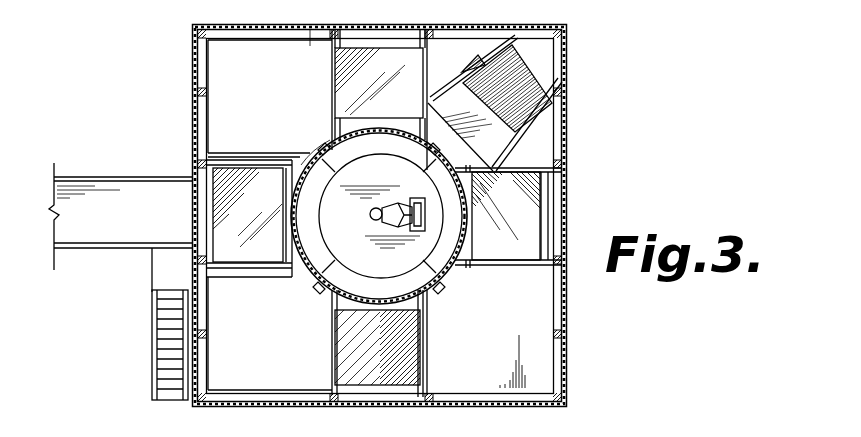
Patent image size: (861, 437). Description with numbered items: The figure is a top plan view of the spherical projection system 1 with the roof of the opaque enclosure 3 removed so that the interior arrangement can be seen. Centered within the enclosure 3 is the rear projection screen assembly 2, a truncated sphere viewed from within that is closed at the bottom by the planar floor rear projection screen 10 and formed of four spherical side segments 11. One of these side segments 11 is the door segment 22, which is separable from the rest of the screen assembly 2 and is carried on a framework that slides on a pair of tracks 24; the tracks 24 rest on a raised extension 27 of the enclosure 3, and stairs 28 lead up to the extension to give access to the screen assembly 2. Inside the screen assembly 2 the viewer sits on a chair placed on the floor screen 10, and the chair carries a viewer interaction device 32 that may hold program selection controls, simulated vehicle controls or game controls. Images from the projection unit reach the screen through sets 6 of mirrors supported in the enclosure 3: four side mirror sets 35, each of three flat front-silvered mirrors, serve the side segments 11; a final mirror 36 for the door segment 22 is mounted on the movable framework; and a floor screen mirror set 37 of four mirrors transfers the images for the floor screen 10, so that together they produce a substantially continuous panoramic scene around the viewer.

The spherical projection system 1 is at (170, 121).
The rear projection screen assembly 2 is at (432, 291).
The opaque enclosure 3 is at (566, 143).
The sets of mirrors 6 is at (330, 89).
The planar floor rear projection screen 10 is at (361, 216).
The side segments 11 is at (326, 144).
The door segment 22 is at (286, 183).
The tracks 24 is at (142, 178).
The raised extension 27 is at (60, 229).
The stairs 28 is at (170, 352).
The viewer interaction device 32 is at (418, 195).
The side mirror sets 35 is at (425, 66).
The final mirror 36 is at (248, 157).
The floor screen mirror set 37 is at (510, 149).